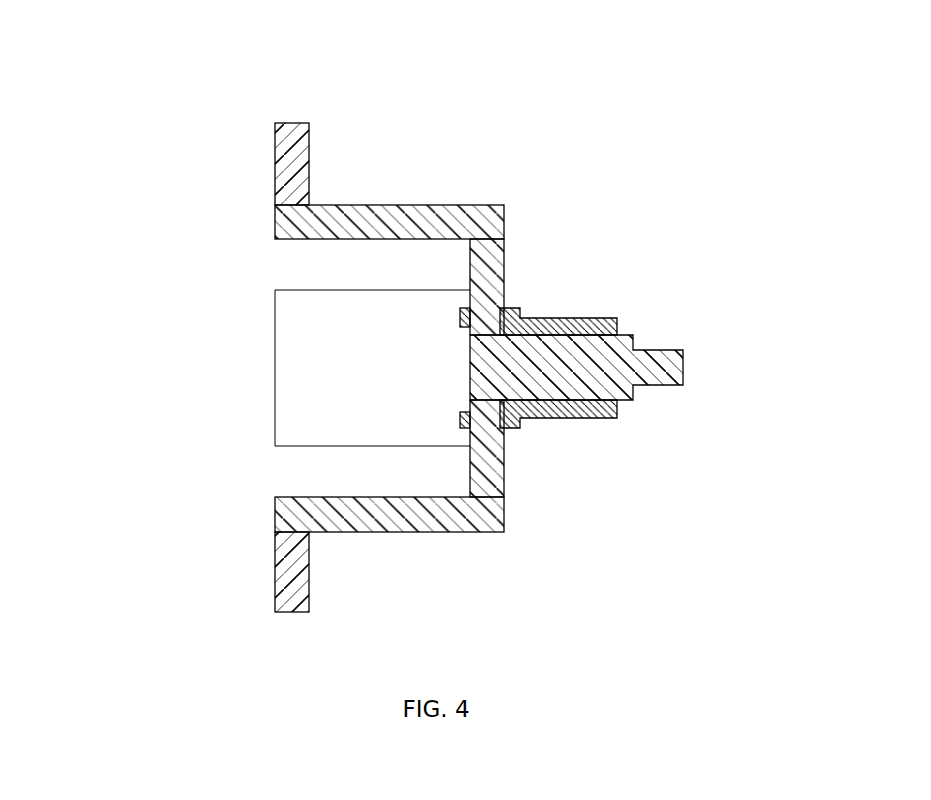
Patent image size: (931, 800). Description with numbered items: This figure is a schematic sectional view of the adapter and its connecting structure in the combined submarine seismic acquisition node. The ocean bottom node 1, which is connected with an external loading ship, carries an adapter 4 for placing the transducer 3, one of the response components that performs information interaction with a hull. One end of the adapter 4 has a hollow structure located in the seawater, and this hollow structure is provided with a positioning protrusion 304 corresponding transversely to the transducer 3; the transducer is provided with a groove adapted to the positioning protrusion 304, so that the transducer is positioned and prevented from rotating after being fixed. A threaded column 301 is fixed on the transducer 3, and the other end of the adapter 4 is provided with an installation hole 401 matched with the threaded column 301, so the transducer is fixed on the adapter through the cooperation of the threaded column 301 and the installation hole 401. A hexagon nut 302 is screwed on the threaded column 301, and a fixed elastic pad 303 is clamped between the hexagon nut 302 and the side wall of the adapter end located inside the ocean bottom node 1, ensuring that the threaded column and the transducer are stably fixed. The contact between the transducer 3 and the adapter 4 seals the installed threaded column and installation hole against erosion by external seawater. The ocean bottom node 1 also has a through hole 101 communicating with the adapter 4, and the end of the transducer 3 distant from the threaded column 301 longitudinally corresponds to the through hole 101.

The ocean bottom node 1 is at (290, 199).
The through hole 101 is at (307, 498).
The transducer 3 is at (328, 376).
The threaded column 301 is at (612, 375).
The hexagon nut 302 is at (563, 325).
The fixed elastic pad 303 is at (525, 425).
The positioning protrusion 304 is at (466, 316).
The adapter 4 is at (446, 351).
The installation hole 401 is at (501, 443).